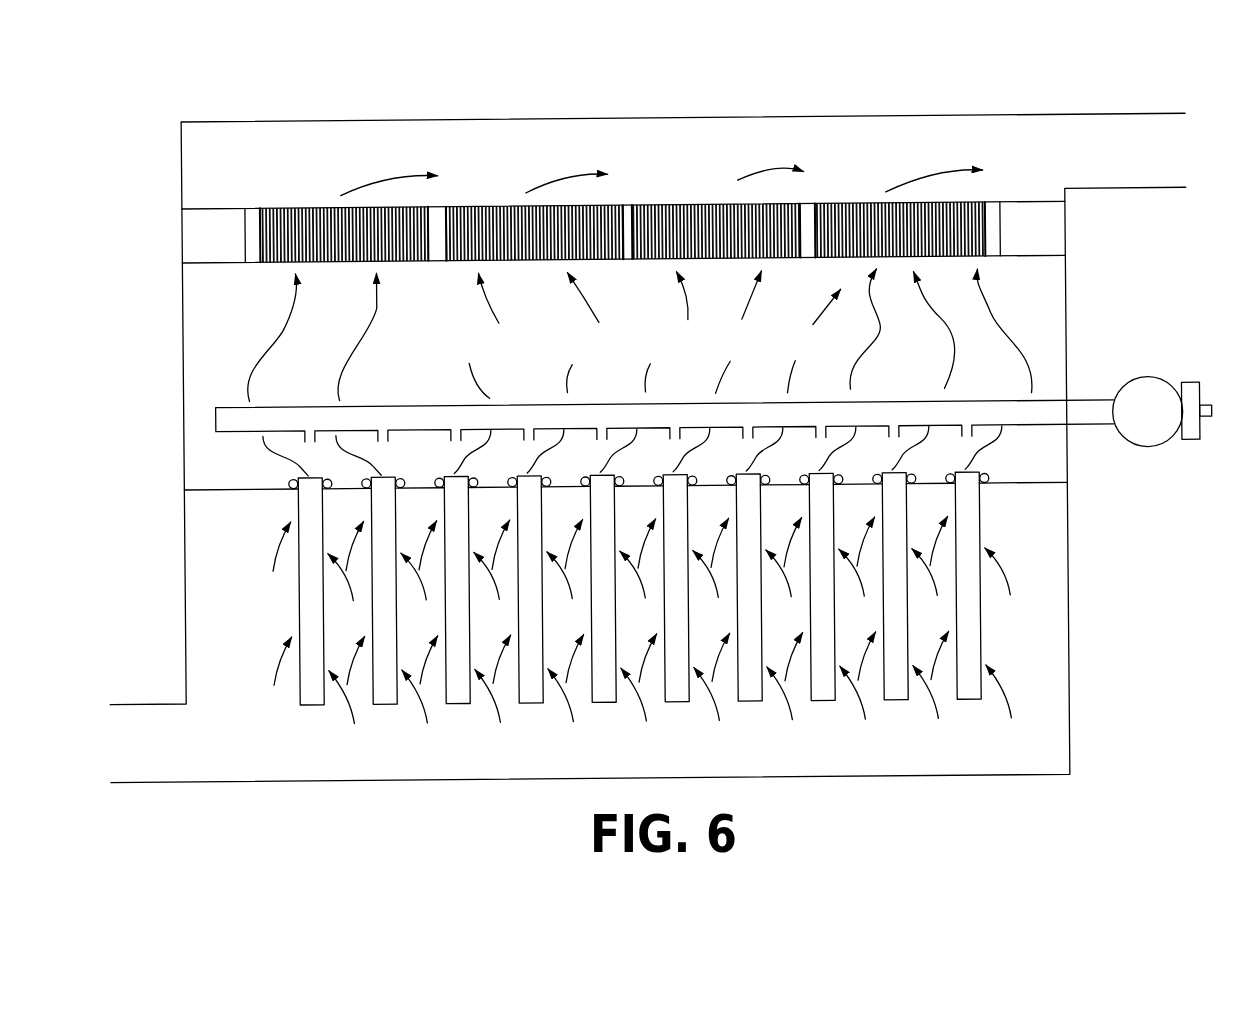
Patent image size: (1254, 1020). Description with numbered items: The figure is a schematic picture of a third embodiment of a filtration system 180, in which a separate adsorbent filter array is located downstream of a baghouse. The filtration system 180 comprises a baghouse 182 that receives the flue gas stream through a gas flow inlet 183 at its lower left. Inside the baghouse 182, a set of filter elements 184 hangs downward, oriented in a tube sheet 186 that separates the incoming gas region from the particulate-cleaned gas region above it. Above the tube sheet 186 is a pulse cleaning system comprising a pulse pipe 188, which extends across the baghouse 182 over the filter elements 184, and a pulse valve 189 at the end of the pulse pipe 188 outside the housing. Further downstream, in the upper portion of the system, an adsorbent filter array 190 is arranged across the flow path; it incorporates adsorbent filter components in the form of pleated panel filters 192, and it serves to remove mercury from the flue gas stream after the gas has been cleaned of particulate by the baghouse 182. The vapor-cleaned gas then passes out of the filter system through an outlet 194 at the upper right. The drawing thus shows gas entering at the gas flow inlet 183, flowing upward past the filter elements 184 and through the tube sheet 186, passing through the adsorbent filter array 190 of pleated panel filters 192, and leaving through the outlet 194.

The filtration system 180 is at (358, 79).
The baghouse 182 is at (1073, 727).
The gas flow inlet 183 is at (228, 756).
The filter elements 184 is at (980, 605).
The tube sheet 186 is at (1031, 484).
The pulse pipe 188 is at (1045, 400).
The pulse valve 189 is at (1189, 442).
The adsorbent filter array 190 is at (863, 198).
The pleated panel filters 192 is at (323, 232).
The outlet 194 is at (1075, 160).